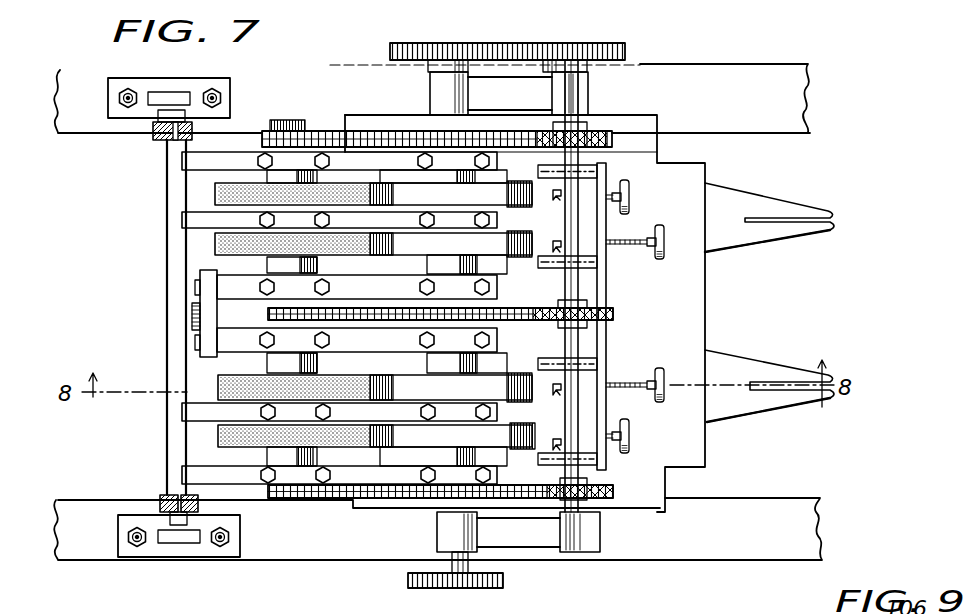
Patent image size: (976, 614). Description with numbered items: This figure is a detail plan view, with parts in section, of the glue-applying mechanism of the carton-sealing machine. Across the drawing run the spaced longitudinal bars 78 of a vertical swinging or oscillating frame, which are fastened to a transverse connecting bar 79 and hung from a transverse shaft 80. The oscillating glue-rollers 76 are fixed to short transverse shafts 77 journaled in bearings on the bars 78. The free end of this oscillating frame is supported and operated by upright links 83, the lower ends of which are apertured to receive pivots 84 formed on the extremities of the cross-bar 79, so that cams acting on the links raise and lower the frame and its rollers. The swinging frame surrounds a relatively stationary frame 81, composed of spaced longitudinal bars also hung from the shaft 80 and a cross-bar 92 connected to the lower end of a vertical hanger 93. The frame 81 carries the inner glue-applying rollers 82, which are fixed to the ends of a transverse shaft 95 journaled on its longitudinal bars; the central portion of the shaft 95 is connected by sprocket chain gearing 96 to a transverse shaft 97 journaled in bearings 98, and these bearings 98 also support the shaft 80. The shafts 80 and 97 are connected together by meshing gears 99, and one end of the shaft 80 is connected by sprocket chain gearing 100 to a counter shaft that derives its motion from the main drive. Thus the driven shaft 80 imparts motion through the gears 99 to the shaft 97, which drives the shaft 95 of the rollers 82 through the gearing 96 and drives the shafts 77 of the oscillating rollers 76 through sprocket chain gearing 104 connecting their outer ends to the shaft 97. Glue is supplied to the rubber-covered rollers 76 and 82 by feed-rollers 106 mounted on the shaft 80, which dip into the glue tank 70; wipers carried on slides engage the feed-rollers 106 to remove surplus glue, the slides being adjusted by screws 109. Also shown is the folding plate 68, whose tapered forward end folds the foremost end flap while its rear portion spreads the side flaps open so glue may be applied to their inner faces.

The folding plate 68 is at (748, 241).
The glue tank 70 is at (195, 221).
The oscillating glue-rollers 76 is at (218, 191).
The short transverse shafts 77 is at (300, 120).
The longitudinal bars 78 is at (213, 158).
The transverse connecting bar 79 is at (167, 230).
The transverse shaft 80 is at (448, 128).
The relatively stationary frame 81 is at (421, 314).
The inner glue-applying rollers 82 is at (217, 243).
The upright links 83 is at (197, 507).
The pivots 84 is at (158, 500).
The cross-bar 92 is at (207, 333).
The vertical hanger 93 is at (190, 316).
The transverse shaft 95 is at (306, 271).
The sprocket chain gearing 96 is at (503, 309).
The transverse shaft 97 is at (580, 135).
The bearings 98 is at (515, 312).
The meshing gears 99 is at (478, 41).
The sprocket chain gearing 100 is at (447, 577).
The sprocket chain gearing 104 is at (330, 128).
The feed-rollers 106 is at (480, 387).
The screws 109 is at (634, 204).